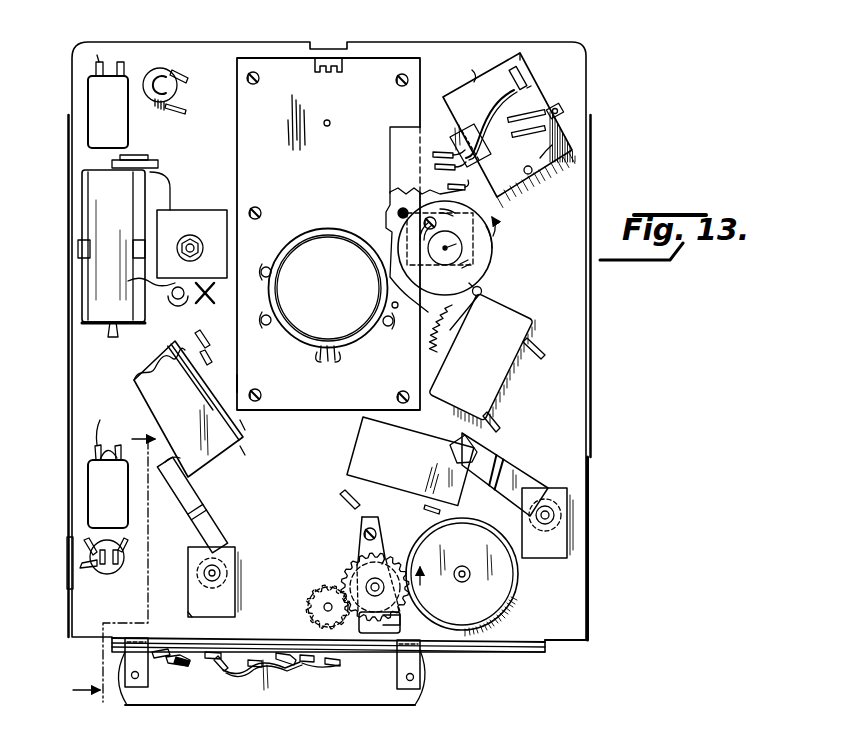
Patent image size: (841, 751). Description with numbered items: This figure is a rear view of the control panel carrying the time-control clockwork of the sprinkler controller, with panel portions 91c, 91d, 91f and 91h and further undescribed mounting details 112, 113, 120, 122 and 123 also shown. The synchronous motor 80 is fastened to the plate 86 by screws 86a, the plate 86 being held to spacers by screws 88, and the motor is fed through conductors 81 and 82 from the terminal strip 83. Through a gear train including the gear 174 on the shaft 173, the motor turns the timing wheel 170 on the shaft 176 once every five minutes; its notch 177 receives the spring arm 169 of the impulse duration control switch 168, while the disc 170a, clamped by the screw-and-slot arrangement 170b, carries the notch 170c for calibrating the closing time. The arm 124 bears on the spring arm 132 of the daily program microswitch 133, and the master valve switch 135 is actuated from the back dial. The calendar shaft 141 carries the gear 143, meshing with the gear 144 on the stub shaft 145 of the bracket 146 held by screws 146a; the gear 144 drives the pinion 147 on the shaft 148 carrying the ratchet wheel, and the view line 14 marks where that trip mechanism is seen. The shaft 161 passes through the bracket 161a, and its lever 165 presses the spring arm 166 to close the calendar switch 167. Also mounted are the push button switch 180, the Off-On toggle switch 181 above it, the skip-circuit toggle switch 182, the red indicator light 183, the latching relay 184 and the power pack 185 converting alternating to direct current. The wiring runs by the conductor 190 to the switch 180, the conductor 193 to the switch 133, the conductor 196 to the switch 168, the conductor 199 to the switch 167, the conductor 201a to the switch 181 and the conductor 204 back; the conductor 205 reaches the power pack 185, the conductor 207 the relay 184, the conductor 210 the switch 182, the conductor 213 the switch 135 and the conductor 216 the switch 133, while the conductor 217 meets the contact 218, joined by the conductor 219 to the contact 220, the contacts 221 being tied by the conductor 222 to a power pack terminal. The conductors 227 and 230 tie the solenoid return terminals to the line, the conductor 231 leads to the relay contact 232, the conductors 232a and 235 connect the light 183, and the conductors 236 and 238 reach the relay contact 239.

The section line 14- 14 is at (96, 571).
The synchronous motor 80 is at (314, 246).
The conductor 81 is at (321, 361).
The conductor 82 is at (335, 360).
The terminal strip 83 is at (410, 706).
The plate 86 is at (302, 411).
The screws 86a is at (265, 266).
The screws 88 is at (258, 84).
The rail flange 91c is at (495, 648).
The rail flange 91d is at (500, 648).
The bracket curved flange 91f is at (133, 700).
The mounting bracket 91h is at (139, 676).
The notched bracket 112 is at (335, 50).
The hole 113 is at (328, 120).
The bracket 120 is at (236, 553).
The pivot 122 is at (214, 568).
The bracket edge 123 is at (200, 616).
The arm 124 is at (205, 504).
The spring arm 132 is at (198, 470).
The daily program microswitch 133 is at (239, 451).
The master valve switch 135 is at (128, 383).
The shaft 141 is at (462, 569).
The gear 143 is at (517, 596).
The gear 144 is at (358, 565).
The stub shaft 145 is at (370, 586).
The bracket 146 is at (368, 519).
The screws 146a is at (364, 533).
The pinion 147 is at (315, 618).
The shaft 148 is at (324, 607).
The shaft 161 is at (546, 512).
The bracket 161a is at (538, 559).
The lever 165 is at (522, 470).
The spring arm 166 is at (478, 454).
The calendar switch 167 is at (360, 458).
The impulse duration control switch 168 is at (531, 320).
The spring arm 169 is at (465, 328).
The timing wheel 170 is at (492, 261).
The disc 170a is at (497, 252).
The screw and slot arrangement 170b is at (400, 214).
The notch 170c is at (440, 248).
The shaft 173 is at (397, 306).
The gear 174 is at (469, 322).
The shaft 176 is at (449, 241).
The notch 177 is at (483, 290).
The push button switch 180 is at (90, 555).
The Off-On toggle switch 181 is at (100, 496).
The Off-On toggle switch 182 is at (92, 100).
The red indicator light 183 is at (152, 68).
The latching relay 184 is at (545, 99).
The power pack 185 is at (92, 300).
The conductor 190 is at (85, 566).
The conductor 193 is at (210, 362).
The conductor 196 is at (499, 412).
The conductor 199 is at (541, 353).
The conductor 201a is at (98, 445).
The conductor 204 is at (140, 546).
The conductor 205 is at (168, 181).
The conductor 207 is at (160, 166).
The conductor 210 is at (120, 62).
The conductor 213 is at (100, 62).
The conductor 216 is at (238, 383).
The conductor 217 is at (208, 344).
The contact 218 is at (206, 286).
The conductor 219 is at (212, 292).
The contact 220 is at (139, 281).
The contacts 221 is at (180, 289).
The conductor 222 is at (115, 320).
The conductor 227 is at (226, 672).
The conductor 230 is at (284, 675).
The conductor 231 is at (545, 160).
The contact 232 is at (565, 110).
The conductor 232a is at (182, 78).
The conductor 235 is at (186, 112).
The conductor 236 is at (486, 200).
The conductor 238 is at (490, 106).
The contact 239 is at (521, 53).